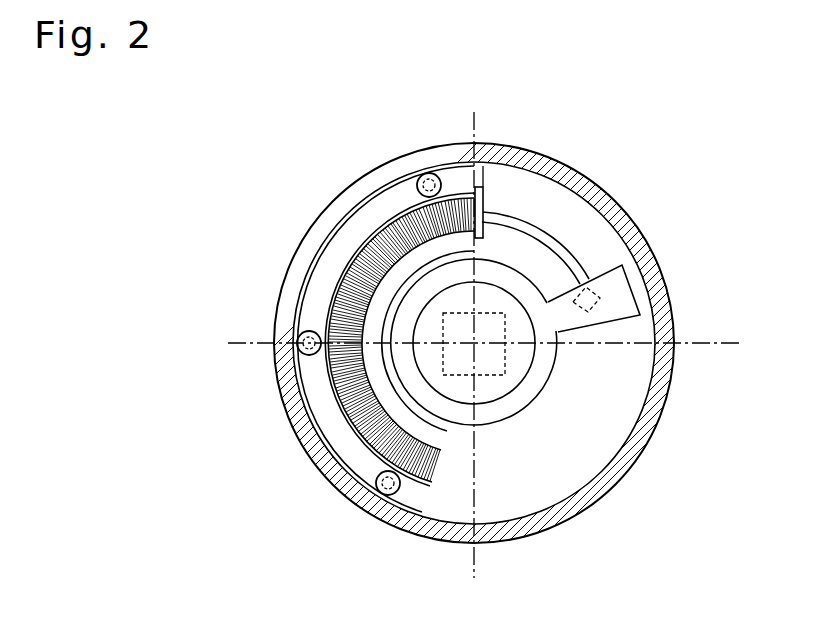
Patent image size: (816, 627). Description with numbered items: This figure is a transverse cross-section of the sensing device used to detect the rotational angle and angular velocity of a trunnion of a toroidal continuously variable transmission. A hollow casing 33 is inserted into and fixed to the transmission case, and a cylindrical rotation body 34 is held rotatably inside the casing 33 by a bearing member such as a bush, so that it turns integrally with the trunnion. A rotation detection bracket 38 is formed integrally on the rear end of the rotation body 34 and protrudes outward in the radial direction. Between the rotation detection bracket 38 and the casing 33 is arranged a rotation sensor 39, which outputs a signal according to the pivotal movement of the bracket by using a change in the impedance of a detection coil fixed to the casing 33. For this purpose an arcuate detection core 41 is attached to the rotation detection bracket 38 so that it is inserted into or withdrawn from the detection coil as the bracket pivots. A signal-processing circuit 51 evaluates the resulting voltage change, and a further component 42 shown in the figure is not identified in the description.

The hollow casing 33 is at (648, 440).
The rotation body 34 is at (552, 372).
The rotation detection bracket 38 is at (623, 287).
The rotation sensor 39 is at (513, 185).
The detection core 41 is at (575, 262).
The sector gear 42 is at (352, 263).
The signal-processing circuit 51 is at (505, 375).